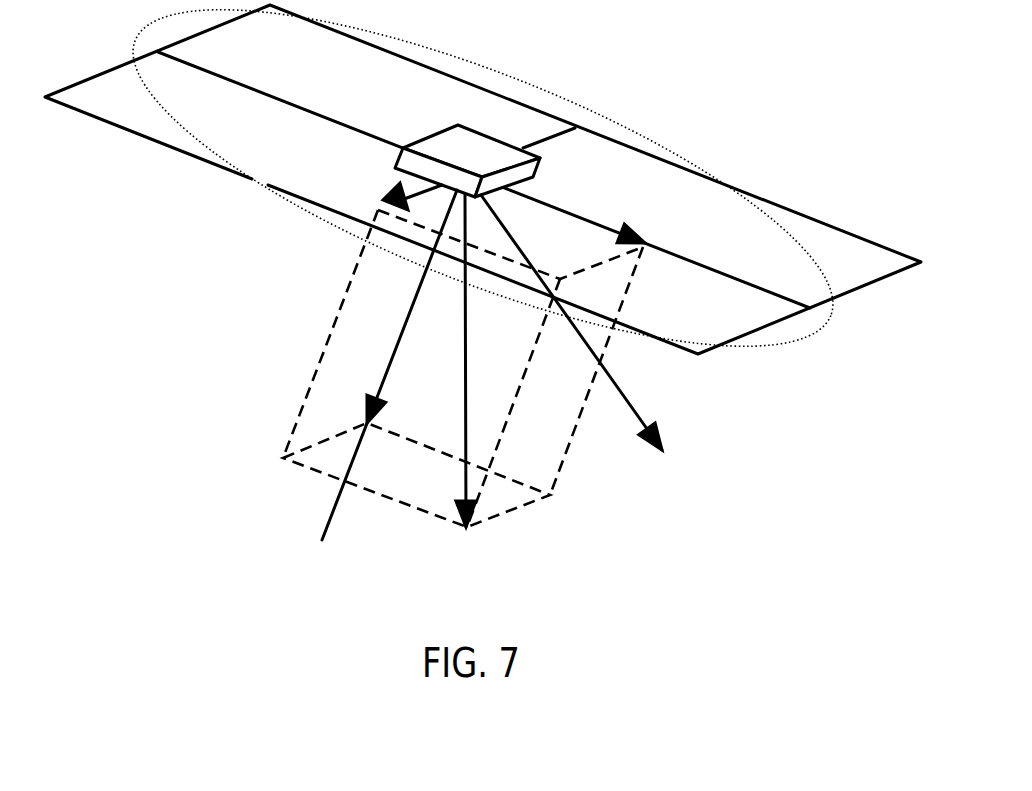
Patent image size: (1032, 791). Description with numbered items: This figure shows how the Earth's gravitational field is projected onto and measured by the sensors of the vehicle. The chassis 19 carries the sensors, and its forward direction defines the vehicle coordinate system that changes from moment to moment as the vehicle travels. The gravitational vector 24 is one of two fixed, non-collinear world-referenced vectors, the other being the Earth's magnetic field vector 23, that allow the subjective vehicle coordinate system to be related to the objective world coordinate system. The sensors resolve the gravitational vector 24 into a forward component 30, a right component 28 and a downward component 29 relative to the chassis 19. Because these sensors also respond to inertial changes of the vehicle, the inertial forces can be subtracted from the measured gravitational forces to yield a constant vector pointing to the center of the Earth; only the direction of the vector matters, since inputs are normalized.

The chassis 19 is at (467, 147).
The magnetic field vector 23 is at (633, 403).
The gravitational vector 24 is at (468, 422).
The right component 28 is at (372, 207).
The downward component 29 is at (388, 346).
The forward component 30 is at (580, 217).